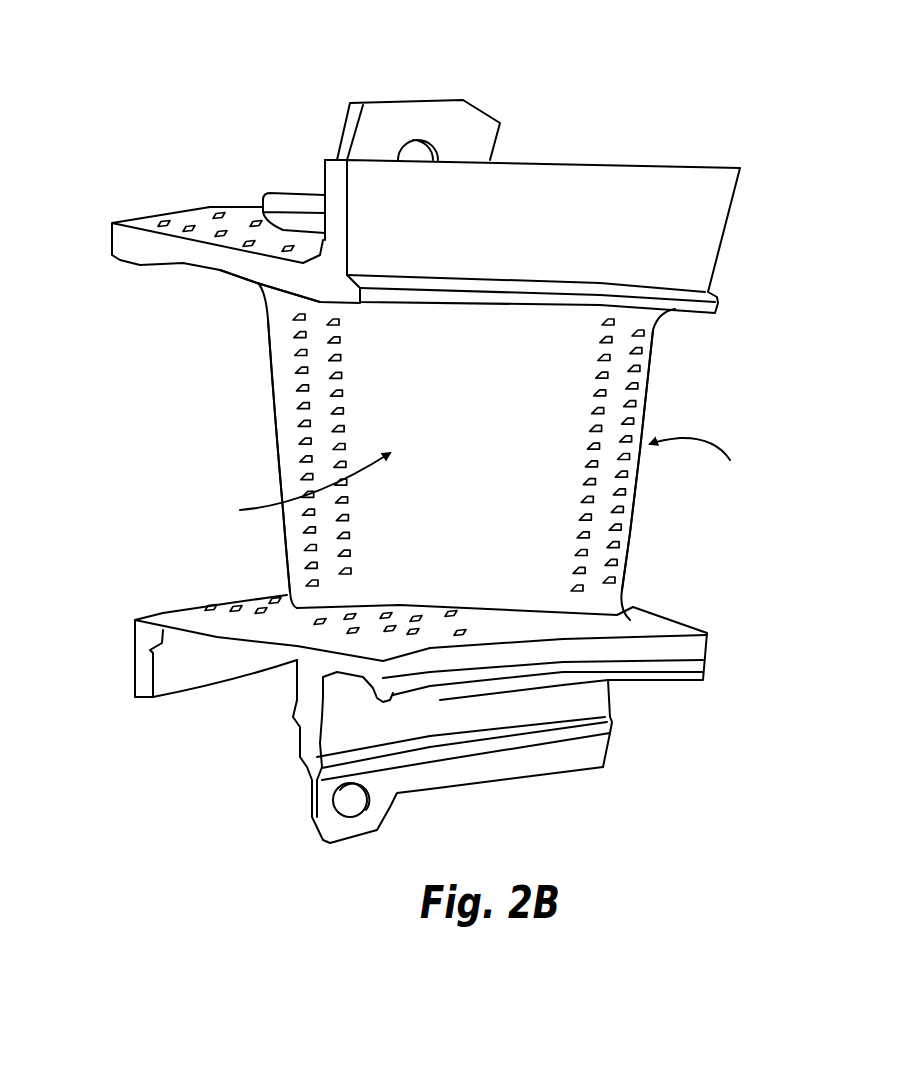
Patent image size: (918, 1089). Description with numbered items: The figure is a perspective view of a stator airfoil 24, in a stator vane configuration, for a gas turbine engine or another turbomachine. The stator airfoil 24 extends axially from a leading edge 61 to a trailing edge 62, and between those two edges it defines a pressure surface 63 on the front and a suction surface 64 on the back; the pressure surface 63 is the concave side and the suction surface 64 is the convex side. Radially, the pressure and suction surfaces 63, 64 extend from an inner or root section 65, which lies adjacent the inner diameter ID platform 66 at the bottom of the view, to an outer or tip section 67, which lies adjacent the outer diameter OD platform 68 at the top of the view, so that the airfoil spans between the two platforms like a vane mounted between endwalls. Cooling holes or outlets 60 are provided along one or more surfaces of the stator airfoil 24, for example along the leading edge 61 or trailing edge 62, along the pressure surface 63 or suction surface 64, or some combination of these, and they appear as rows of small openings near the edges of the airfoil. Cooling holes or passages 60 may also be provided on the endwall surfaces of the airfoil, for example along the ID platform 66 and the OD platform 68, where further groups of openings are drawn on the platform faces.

The stator airfoil 24 is at (137, 88).
The cooling holes 60 is at (222, 213).
The leading edge 61 is at (270, 343).
The trailing edge 62 is at (633, 503).
The pressure surface 63 is at (293, 486).
The suction surface 64 is at (702, 460).
The inner section 65 is at (297, 590).
The ID platform 66 is at (697, 647).
The outer section 67 is at (280, 308).
The OD platform 68 is at (125, 252).